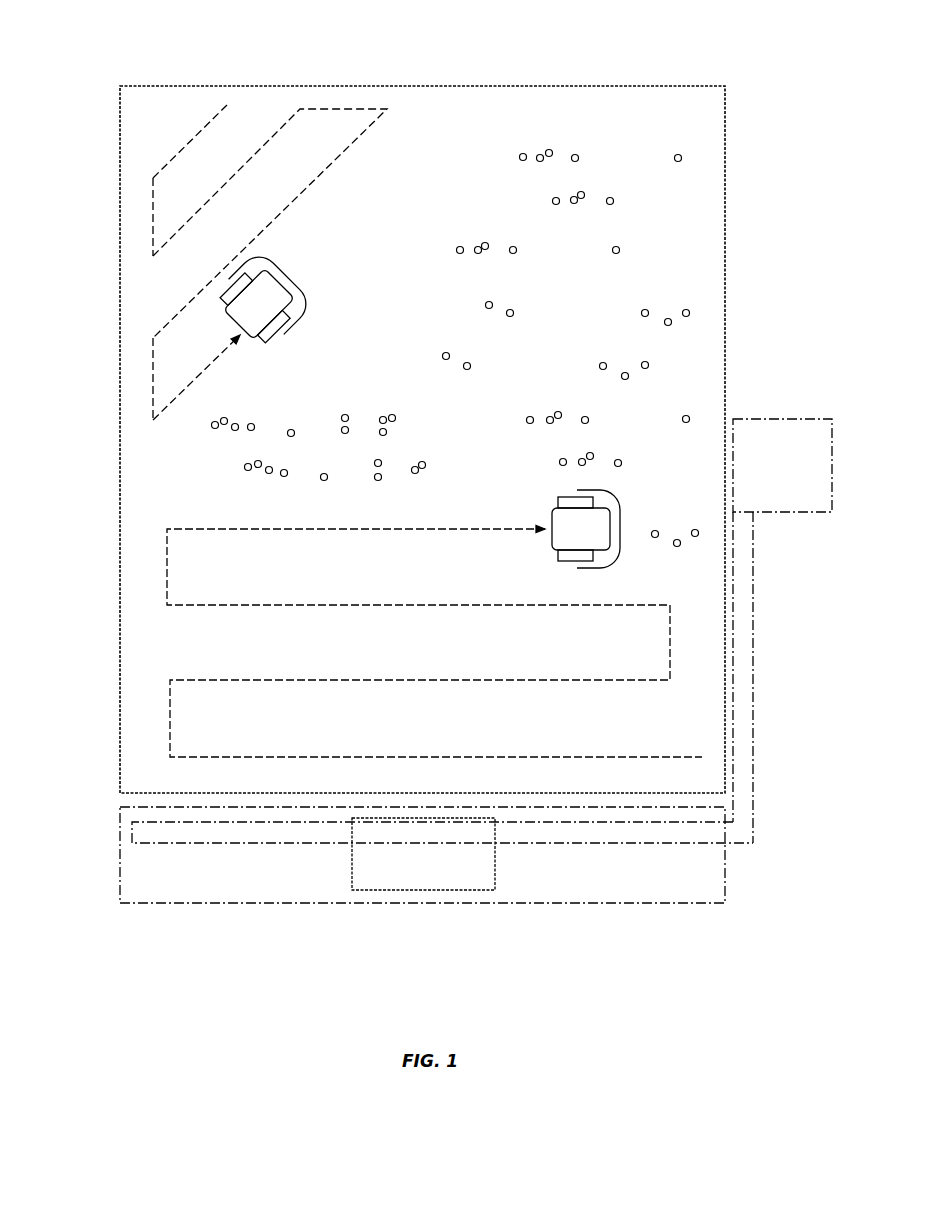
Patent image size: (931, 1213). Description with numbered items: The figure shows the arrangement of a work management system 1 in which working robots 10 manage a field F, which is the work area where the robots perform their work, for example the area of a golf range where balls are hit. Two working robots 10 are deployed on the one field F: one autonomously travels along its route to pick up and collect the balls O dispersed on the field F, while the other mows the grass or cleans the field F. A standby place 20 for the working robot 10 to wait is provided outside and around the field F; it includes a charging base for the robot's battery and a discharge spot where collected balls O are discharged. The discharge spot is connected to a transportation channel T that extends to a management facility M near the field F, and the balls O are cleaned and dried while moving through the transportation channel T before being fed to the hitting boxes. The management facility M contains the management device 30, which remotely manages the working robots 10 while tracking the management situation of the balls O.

The work management system 1 is at (422, 406).
The field F is at (444, 71).
The balls O is at (628, 249).
The working robot 10 is at (463, 408).
The standby place 20 is at (771, 418).
The transportation channel T is at (760, 573).
The management facility M is at (119, 866).
The management device 30 is at (432, 892).